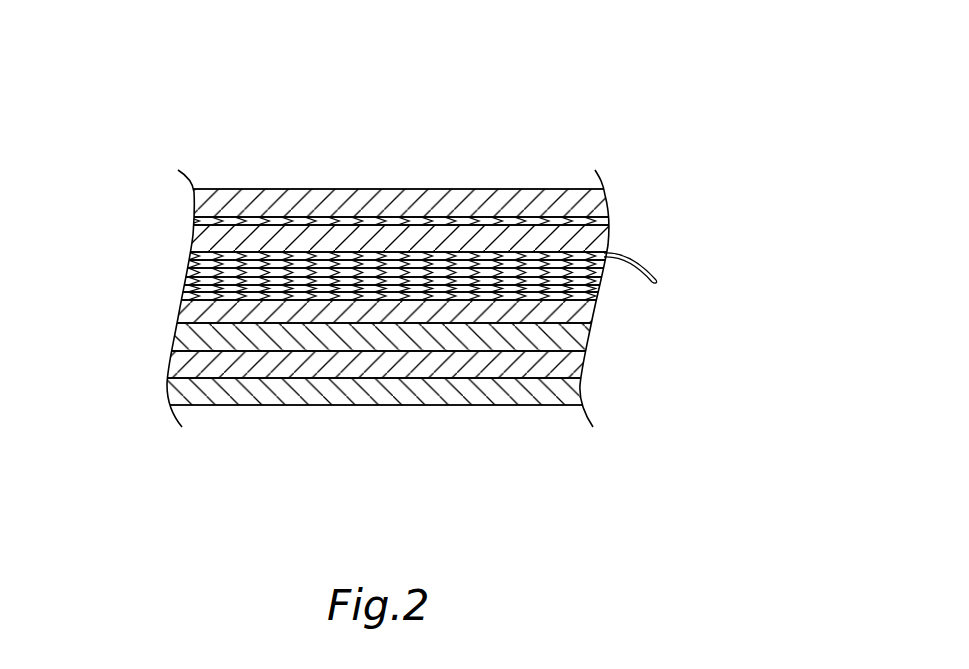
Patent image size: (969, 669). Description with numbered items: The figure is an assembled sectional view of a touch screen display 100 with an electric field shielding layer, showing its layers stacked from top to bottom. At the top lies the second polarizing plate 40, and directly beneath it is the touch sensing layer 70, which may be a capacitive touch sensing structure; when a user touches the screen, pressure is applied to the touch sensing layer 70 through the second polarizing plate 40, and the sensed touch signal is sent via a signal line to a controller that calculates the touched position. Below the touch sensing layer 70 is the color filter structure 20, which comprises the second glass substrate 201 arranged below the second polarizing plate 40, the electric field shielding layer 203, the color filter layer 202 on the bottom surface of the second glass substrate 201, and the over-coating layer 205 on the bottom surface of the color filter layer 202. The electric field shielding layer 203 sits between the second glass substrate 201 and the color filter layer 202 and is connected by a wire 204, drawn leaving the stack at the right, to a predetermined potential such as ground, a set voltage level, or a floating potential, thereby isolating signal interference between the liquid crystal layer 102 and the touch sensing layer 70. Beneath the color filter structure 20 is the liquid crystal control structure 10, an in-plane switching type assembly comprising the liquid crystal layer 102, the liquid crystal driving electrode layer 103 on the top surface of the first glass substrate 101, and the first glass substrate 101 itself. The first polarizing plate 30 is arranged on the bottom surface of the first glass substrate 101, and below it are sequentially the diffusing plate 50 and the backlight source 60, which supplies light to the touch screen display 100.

The touch screen display 100 is at (549, 96).
The liquid crystal control structure 10 is at (328, 304).
The first glass substrate 101 is at (177, 320).
The liquid crystal layer 102 is at (187, 280).
The liquid crystal driving electrode layer 103 is at (182, 293).
The color filter structure 20 is at (350, 260).
The second glass substrate 201 is at (193, 233).
The color filter layer 202 is at (192, 258).
The electric field shielding layer 203 is at (193, 250).
The wire 204 is at (645, 290).
The over-coating layer 205 is at (190, 267).
The first polarizing plate 30 is at (173, 345).
The second polarizing plate 40 is at (606, 190).
The diffusing plate 50 is at (170, 370).
The backlight source 60 is at (172, 391).
The touch sensing layer 70 is at (610, 222).